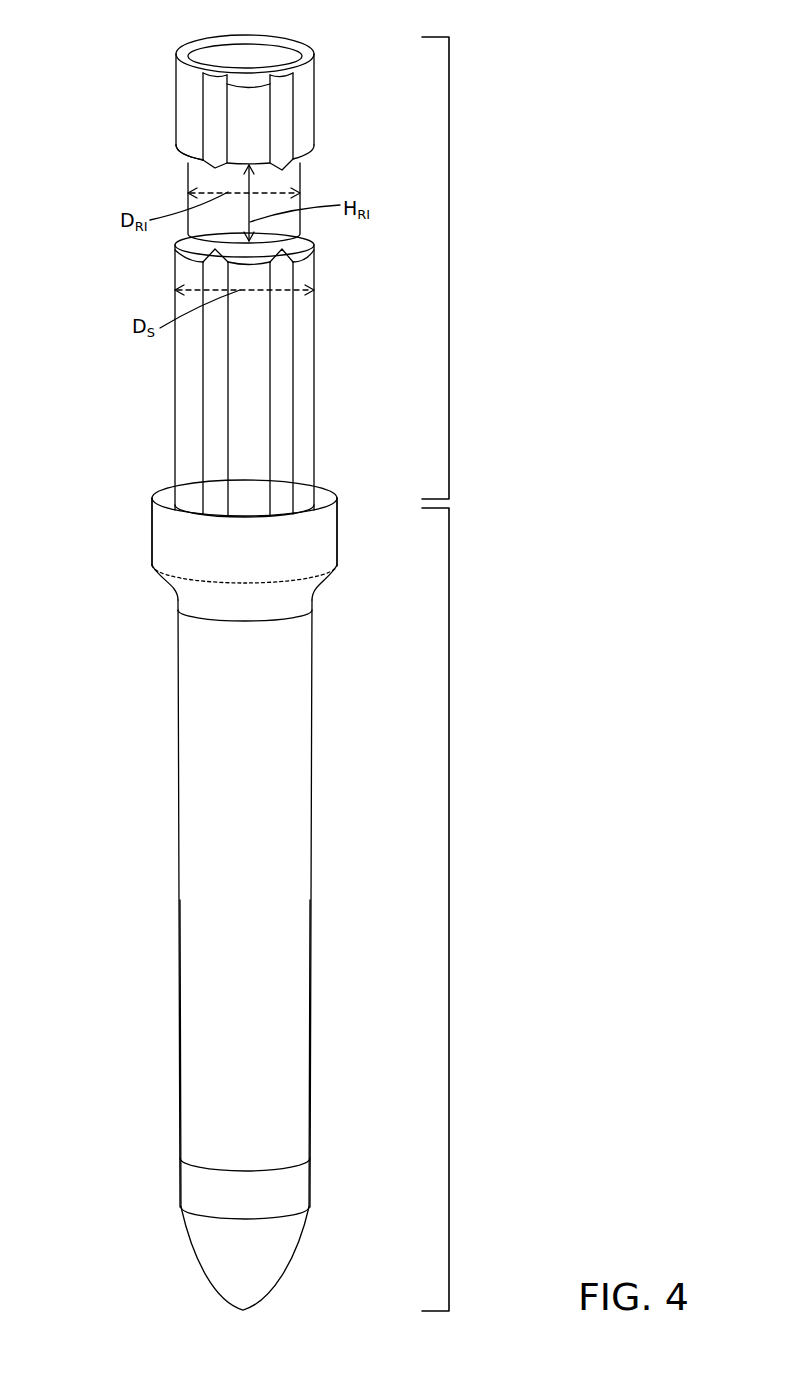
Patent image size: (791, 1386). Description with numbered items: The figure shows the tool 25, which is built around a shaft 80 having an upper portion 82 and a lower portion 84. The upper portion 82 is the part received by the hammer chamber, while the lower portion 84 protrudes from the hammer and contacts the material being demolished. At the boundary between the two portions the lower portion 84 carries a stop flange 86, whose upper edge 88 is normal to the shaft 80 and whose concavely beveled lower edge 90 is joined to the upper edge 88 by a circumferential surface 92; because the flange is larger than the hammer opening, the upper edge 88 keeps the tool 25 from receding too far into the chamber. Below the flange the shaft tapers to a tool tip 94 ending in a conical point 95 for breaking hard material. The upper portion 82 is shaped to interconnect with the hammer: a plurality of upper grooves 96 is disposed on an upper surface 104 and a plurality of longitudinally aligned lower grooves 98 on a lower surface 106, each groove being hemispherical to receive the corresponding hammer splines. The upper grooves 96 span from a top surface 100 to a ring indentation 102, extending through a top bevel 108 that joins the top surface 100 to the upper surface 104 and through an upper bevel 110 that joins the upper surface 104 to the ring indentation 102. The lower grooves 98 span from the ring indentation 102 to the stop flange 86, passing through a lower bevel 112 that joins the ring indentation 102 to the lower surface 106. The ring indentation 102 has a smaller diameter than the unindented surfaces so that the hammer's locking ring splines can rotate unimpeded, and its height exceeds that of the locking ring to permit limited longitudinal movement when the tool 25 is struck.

The tool 25 is at (537, 44).
The shaft 80 is at (240, 670).
The upper portion 82 is at (449, 272).
The lower portion 84 is at (449, 888).
The stop flange 86 is at (152, 533).
The upper edge 88 is at (320, 498).
The lower edge 90 is at (195, 597).
The circumferential surface 92 is at (302, 556).
The tool tip 94 is at (193, 976).
The conical point 95 is at (248, 1263).
The upper grooves 96 is at (215, 100).
The lower grooves 98 is at (215, 358).
The top surface 100 is at (228, 53).
The ring indentation 102 is at (300, 182).
The upper surface 104 is at (193, 132).
The lower surface 106 is at (192, 427).
The top bevel 108 is at (302, 62).
The upper bevel 110 is at (190, 155).
The lower bevel 112 is at (290, 253).